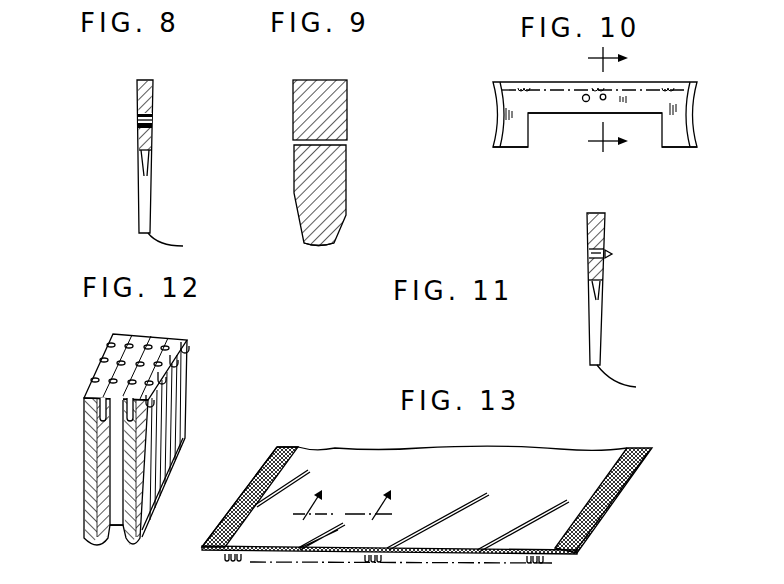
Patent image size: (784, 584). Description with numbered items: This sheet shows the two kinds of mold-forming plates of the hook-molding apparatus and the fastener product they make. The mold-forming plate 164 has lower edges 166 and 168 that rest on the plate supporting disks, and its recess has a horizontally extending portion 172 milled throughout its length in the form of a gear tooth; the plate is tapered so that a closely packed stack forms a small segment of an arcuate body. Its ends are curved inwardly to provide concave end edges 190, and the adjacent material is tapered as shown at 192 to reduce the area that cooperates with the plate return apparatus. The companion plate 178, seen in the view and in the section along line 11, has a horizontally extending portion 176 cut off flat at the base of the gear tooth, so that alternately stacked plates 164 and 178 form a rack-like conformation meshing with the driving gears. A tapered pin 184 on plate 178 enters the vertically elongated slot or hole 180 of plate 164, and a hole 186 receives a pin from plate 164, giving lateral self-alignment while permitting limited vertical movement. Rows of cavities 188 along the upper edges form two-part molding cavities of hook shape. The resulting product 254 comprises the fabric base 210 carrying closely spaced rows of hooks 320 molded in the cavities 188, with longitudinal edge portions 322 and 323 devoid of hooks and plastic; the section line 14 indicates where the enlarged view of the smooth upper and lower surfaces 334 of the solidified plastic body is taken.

In FIG. 10, the section line 11— 11 is at (599, 99).
In FIG. 13, the section line 14— 14 is at (338, 515).
In FIG. 8, the mold-forming plate 164 is at (158, 132).
In FIG. 9, the mold-forming plate 164 is at (353, 122).
In FIG. 12, the mold-forming plate 164 is at (197, 403).
In FIG. 8, the lower edge 166 is at (180, 243).
In FIG. 10, the lower edge 166 is at (682, 150).
In FIG. 11, the lower edge 166 is at (631, 380).
In FIG. 10, the lower edge 168 is at (517, 150).
In FIG. 8, the horizontally extending portion 172 is at (147, 152).
In FIG. 12, the horizontally extending portion 172 is at (90, 537).
In FIG. 10, the horizontally extending portion 176 is at (587, 113).
In FIG. 11, the horizontally extending portion 176 is at (597, 285).
In FIG. 12, the horizontally extending portion 176 is at (109, 548).
In FIG. 10, the mold-forming plate 178 is at (687, 74).
In FIG. 11, the mold-forming plate 178 is at (614, 221).
In FIG. 12, the mold-forming plate 178 is at (114, 494).
In FIG. 8, the vertically elongated slot or hole 180 is at (138, 117).
In FIG. 10, the tapered pin 184 is at (607, 96).
In FIG. 11, the tapered pin 184 is at (610, 256).
In FIG. 10, the hole 186 is at (583, 95).
In FIG. 12, the cavities 188 is at (122, 367).
In FIG. 9, the concave end edges 190 is at (317, 246).
In FIG. 10, the concave end edges 190 is at (498, 110).
In FIG. 9, the tapered portion 192 is at (298, 215).
In FIG. 13, the fabric base 210 is at (238, 487).
In FIG. 13, the product 254 is at (584, 458).
In FIG. 13, the hooks 320 is at (242, 556).
In FIG. 13, the longitudinal edge portion 322 is at (213, 549).
In FIG. 13, the longitudinal edge portion 323 is at (568, 554).
In FIG. 13, the upper and lower surfaces 334 is at (361, 462).